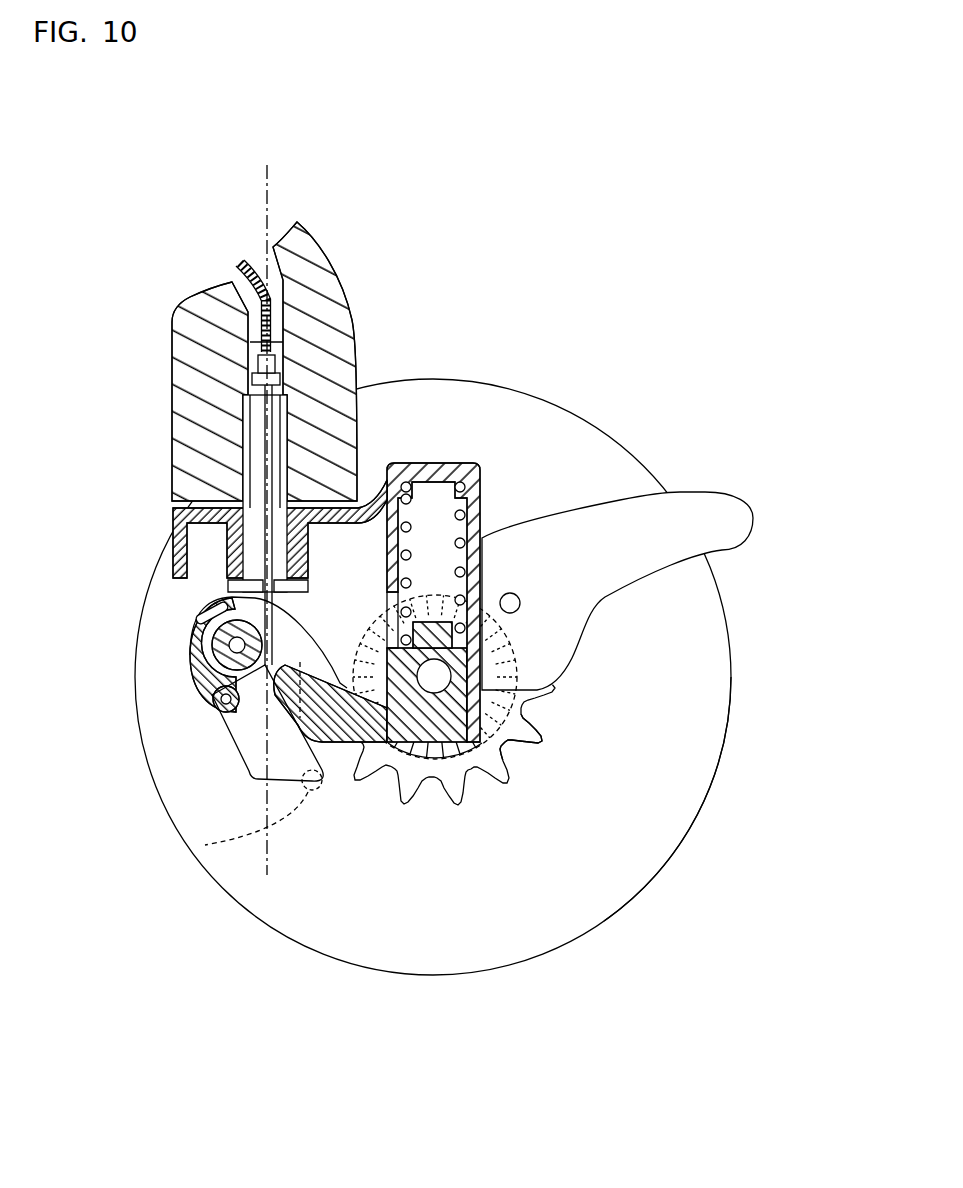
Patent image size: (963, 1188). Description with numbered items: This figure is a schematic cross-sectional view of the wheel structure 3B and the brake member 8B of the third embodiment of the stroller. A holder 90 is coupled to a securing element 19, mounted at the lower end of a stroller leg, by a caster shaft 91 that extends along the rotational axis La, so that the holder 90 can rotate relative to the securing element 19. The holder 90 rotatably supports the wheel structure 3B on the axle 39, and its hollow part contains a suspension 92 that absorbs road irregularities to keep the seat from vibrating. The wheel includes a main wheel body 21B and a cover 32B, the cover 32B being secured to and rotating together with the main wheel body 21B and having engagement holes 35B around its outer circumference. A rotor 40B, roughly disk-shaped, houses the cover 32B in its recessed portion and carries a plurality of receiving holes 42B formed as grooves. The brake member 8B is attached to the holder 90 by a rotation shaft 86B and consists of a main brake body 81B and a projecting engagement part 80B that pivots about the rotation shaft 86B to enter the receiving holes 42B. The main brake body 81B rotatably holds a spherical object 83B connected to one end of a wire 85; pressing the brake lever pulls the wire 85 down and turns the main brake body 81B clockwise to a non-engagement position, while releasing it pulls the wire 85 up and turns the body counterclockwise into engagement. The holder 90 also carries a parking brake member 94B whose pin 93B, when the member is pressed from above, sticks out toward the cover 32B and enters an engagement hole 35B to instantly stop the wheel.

The wheel structure 3B is at (584, 355).
The brake member 8B is at (171, 689).
The securing element 19 is at (313, 258).
The main wheel body 21B is at (675, 877).
The cover 32B is at (522, 714).
The engagement hole 35B is at (517, 744).
The axle 39 is at (452, 663).
The rotor 40B is at (468, 818).
The receiving holes 42B is at (385, 777).
The engagement part 80B is at (205, 845).
The main brake body 81B is at (247, 747).
The spherical object 83B is at (218, 700).
The wire 85 is at (243, 420).
The rotation shaft 86B is at (190, 647).
The holder 90 is at (443, 463).
The caster shaft 91 is at (243, 468).
The suspension 92 is at (437, 550).
The pin 93B is at (517, 757).
The parking brake member 94B is at (717, 472).
The rotational axis La is at (270, 174).